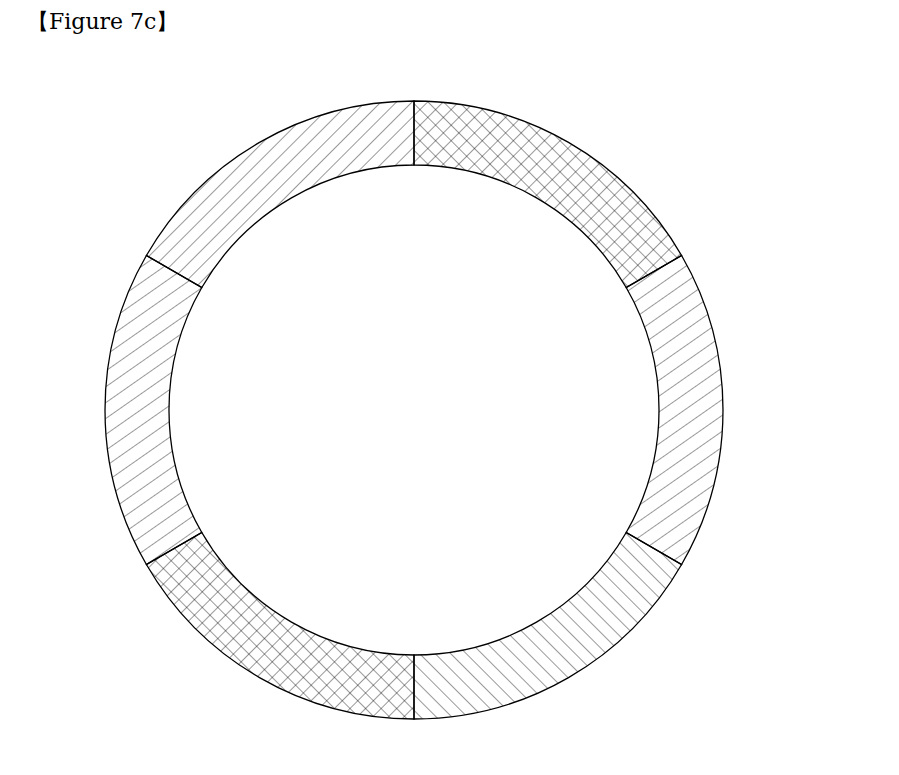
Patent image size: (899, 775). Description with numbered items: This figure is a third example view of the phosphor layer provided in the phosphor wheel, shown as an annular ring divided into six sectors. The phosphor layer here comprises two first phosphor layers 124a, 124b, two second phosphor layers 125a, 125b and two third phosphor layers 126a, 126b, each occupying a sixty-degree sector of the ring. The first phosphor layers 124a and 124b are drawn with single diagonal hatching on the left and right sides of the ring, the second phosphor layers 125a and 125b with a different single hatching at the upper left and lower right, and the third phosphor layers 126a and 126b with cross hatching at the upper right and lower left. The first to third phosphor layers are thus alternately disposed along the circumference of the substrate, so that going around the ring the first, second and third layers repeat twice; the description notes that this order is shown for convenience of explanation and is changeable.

The first phosphor layer 124a is at (117, 365).
The first phosphor layer 124b is at (712, 367).
The second phosphor layer 125a is at (268, 148).
The second phosphor layer 125b is at (588, 662).
The third phosphor layer 126a is at (560, 150).
The third phosphor layer 126b is at (245, 663).